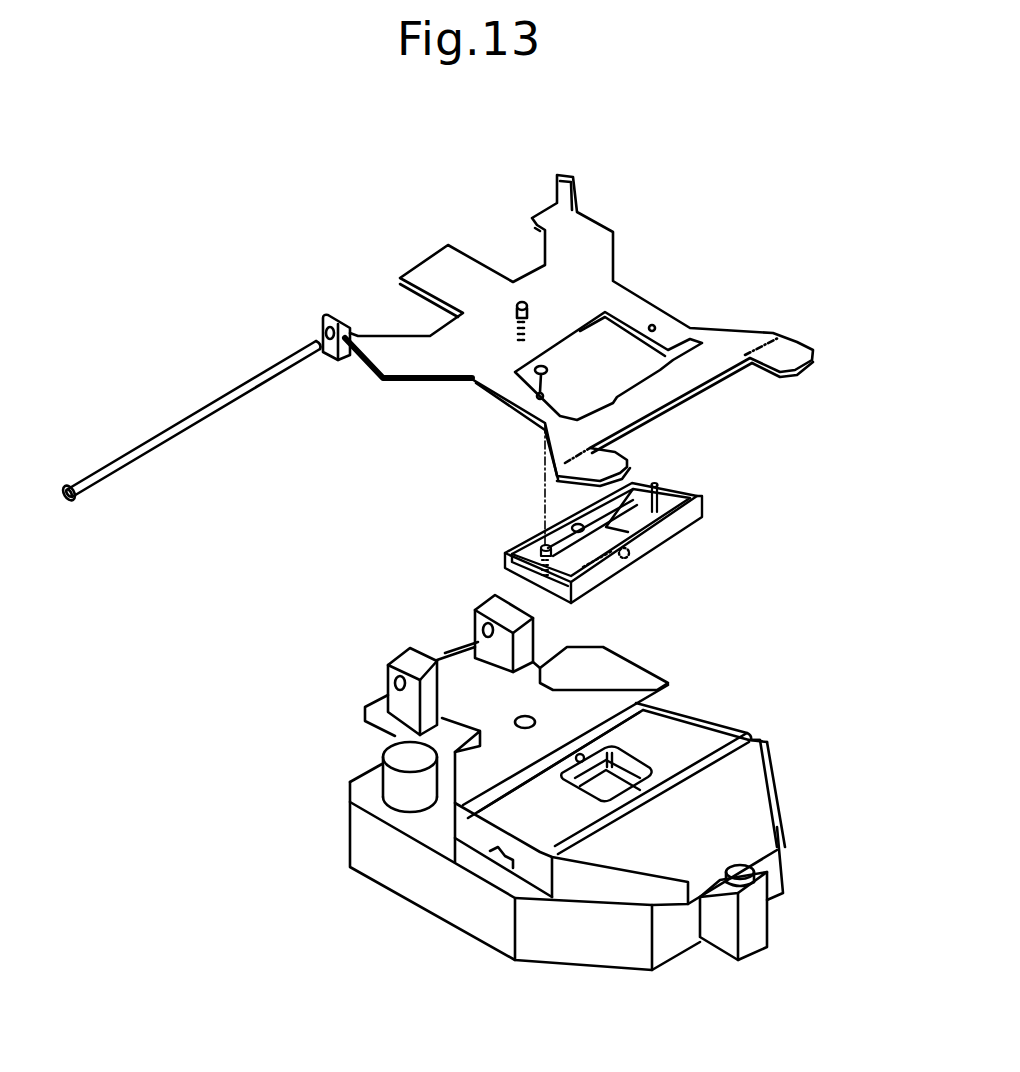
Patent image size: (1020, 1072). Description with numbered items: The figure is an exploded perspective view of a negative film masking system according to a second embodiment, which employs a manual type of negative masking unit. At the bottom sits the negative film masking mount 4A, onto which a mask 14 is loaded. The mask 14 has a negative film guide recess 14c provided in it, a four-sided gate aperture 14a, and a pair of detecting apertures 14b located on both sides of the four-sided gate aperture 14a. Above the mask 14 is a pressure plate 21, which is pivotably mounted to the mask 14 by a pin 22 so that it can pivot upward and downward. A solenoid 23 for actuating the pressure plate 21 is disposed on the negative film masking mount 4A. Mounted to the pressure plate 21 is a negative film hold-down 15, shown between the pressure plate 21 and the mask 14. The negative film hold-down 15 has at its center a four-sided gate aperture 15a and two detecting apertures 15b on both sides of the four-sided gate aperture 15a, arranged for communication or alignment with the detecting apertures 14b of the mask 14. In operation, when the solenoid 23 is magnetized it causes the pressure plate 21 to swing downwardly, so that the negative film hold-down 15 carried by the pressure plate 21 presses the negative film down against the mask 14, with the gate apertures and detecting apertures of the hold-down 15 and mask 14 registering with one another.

The pressure plate 21 is at (612, 270).
The pin 22 is at (210, 418).
The negative film hold-down 15 is at (693, 522).
The four-sided gate aperture 15a is at (655, 480).
The detecting apertures 15b is at (548, 544).
The negative film masking mount 4A is at (355, 842).
The mask 14 is at (580, 885).
The four-sided gate aperture 14a is at (640, 762).
The detecting apertures 14b is at (627, 767).
The negative film guide recess 14c is at (484, 808).
The solenoid 23 is at (390, 755).